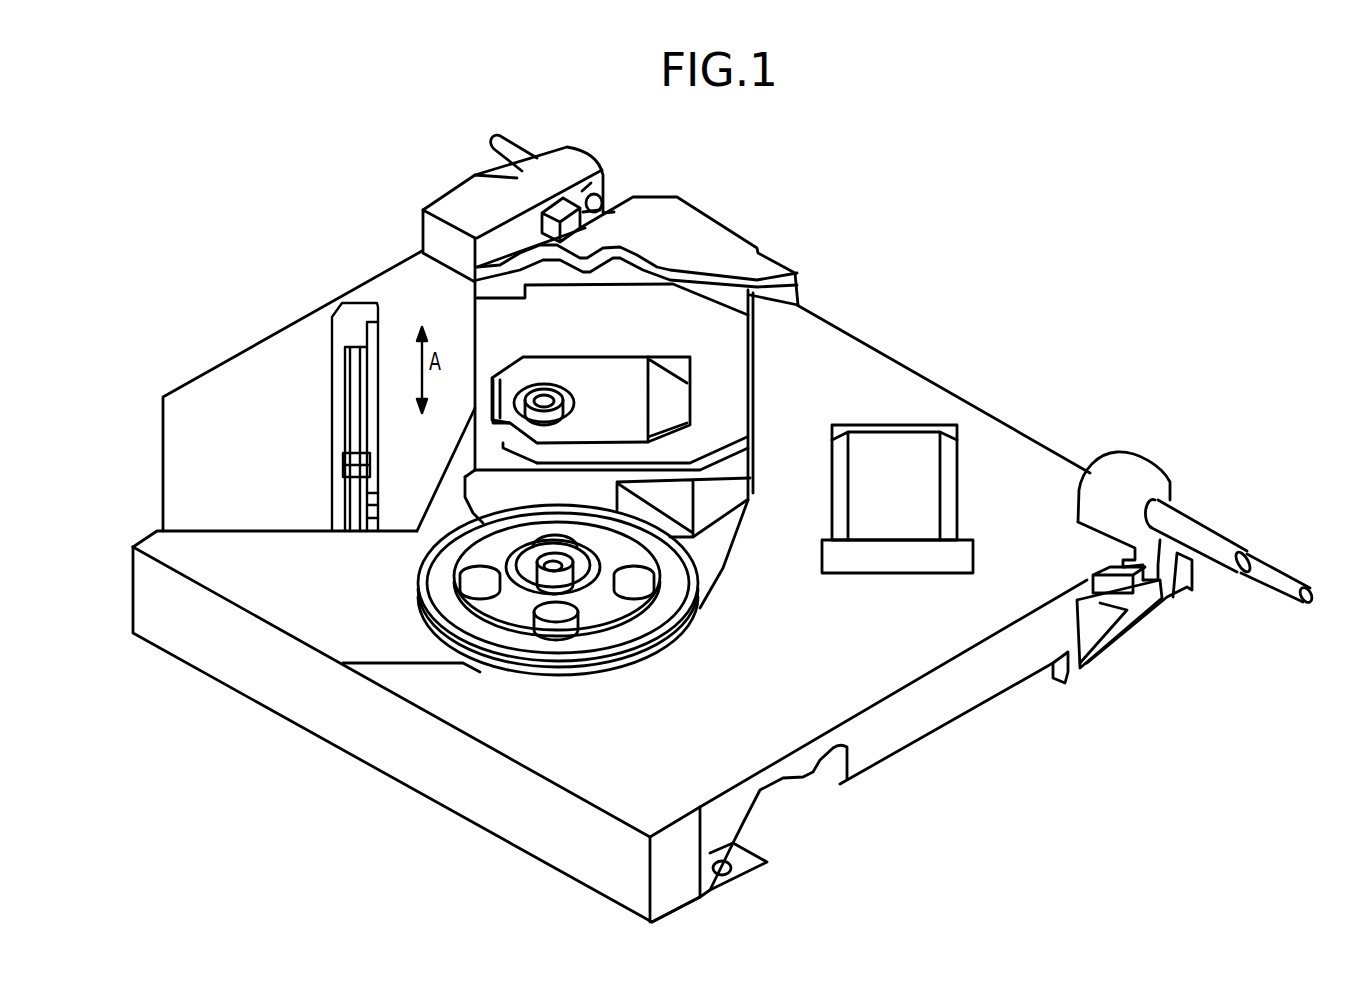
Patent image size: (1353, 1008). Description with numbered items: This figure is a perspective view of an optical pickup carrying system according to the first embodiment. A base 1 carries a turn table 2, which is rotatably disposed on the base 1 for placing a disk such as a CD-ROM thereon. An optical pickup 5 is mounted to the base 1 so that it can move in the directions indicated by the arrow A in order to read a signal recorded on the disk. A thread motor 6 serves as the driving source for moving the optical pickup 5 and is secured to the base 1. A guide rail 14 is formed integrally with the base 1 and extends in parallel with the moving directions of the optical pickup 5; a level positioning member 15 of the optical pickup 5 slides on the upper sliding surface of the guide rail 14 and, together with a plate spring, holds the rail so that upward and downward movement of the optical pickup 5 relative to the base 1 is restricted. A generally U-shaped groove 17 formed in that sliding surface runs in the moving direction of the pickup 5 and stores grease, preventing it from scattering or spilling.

The base 1 is at (803, 373).
The turn table 2 is at (457, 610).
The optical pickup 5 is at (610, 390).
The thread motor 6 is at (897, 475).
The guide rail 14 is at (360, 350).
The level positioning member 15 is at (356, 456).
The groove 17 is at (352, 353).